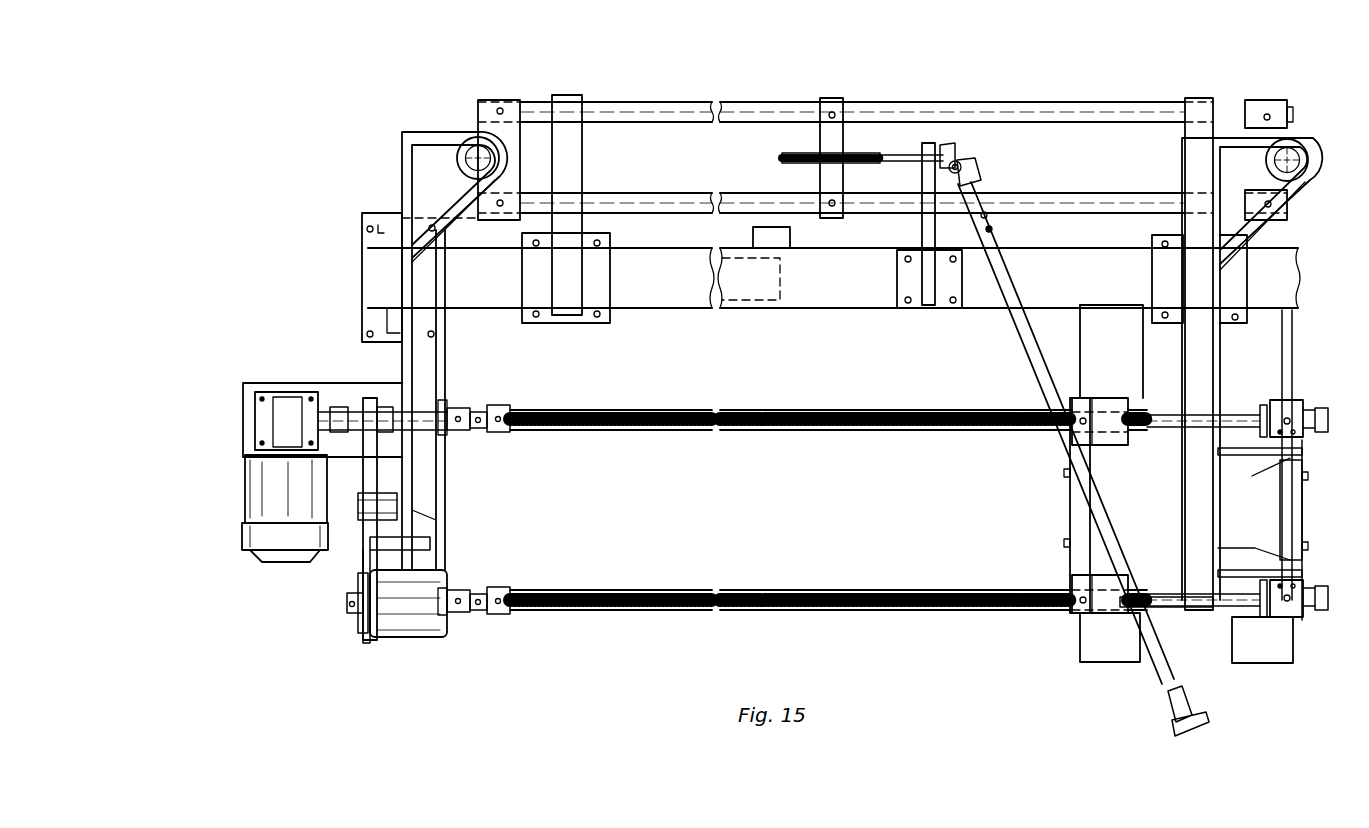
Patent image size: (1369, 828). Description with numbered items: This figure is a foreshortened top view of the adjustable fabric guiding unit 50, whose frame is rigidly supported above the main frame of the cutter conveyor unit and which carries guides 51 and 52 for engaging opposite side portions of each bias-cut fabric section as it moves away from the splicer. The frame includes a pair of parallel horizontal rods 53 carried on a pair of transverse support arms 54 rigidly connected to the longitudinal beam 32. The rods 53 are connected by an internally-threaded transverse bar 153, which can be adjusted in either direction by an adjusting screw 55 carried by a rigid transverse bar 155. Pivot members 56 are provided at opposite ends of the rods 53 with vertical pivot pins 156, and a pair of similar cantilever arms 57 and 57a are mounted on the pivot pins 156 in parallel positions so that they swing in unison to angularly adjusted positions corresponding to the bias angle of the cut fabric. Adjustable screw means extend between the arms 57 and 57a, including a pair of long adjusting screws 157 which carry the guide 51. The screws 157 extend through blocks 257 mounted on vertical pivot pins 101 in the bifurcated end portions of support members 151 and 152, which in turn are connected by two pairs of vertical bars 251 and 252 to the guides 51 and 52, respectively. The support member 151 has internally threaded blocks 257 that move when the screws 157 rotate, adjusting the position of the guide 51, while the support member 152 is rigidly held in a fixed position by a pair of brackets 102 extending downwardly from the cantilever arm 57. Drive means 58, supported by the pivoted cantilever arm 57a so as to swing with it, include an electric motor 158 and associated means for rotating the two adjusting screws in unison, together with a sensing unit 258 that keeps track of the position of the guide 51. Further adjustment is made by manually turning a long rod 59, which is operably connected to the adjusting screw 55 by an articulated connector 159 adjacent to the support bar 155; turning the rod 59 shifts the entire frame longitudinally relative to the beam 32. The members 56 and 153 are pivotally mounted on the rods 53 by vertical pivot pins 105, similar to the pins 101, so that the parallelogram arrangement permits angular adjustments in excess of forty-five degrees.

The longitudinal beam 32 is at (652, 294).
The adjustable fabric guiding unit 50 is at (470, 108).
The guide 51 is at (1082, 340).
The guide 52 is at (1232, 635).
The horizontal rods 53 is at (688, 95).
The transverse support arms 54 is at (566, 159).
The adjusting screw 55 is at (796, 150).
The pivot members 56 is at (488, 104).
The cantilever arm 57 is at (1220, 354).
The cantilever arm 57a is at (437, 382).
The drive means 58 is at (364, 400).
The long rod 59 is at (1006, 244).
The vertical pivot pins 101 is at (1083, 421).
The brackets 102 is at (1290, 460).
The vertical pivot pins 105 is at (503, 109).
The support member 151 is at (1068, 508).
The support member 152 is at (1284, 494).
The internally-threaded transverse bar 153 is at (840, 130).
The rigid transverse bar 155 is at (922, 231).
The vertical pivot pins 156 is at (470, 168).
The long adjusting screws 157 is at (606, 432).
The electric motor 158 is at (238, 520).
The articulated connector 159 is at (963, 160).
The vertical bars 251 is at (1064, 472).
The vertical bars 252 is at (1302, 534).
The blocks 257 is at (1280, 400).
The sensing unit 258 is at (393, 625).